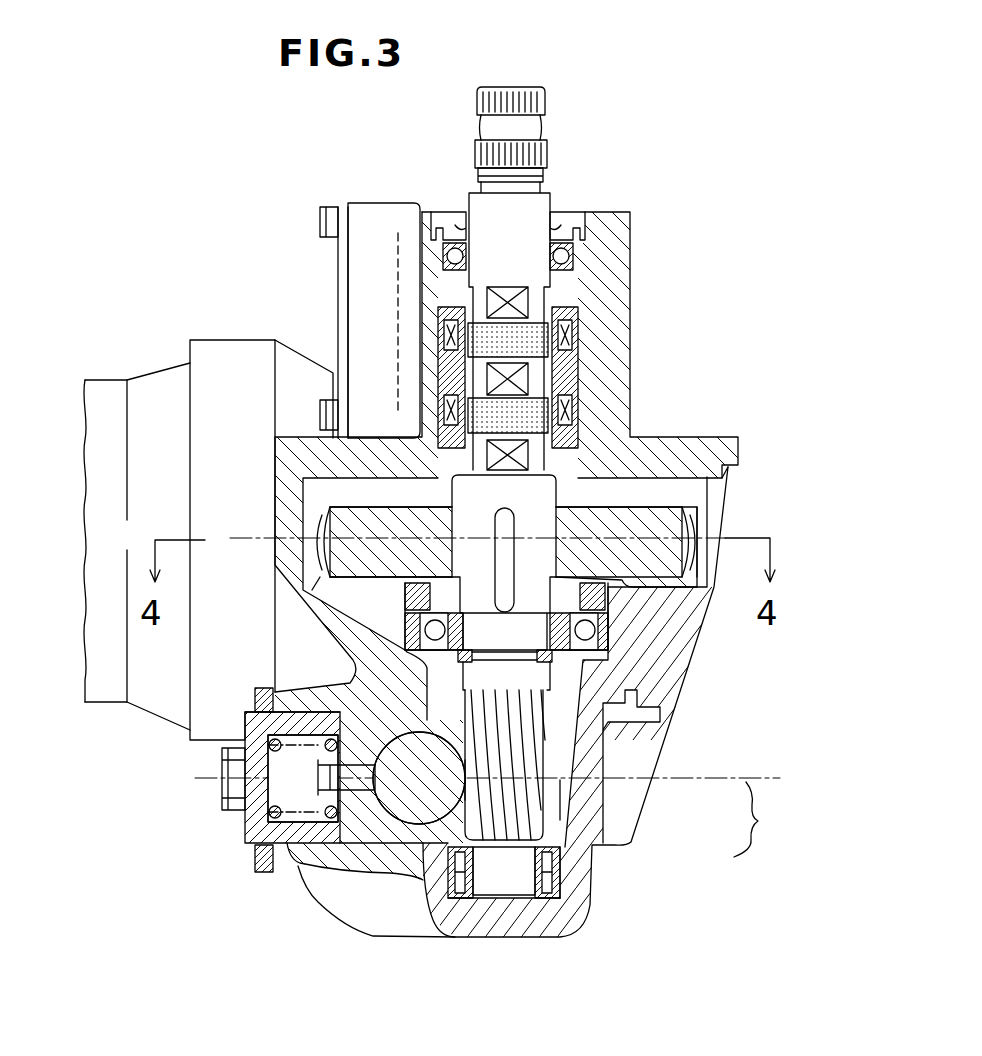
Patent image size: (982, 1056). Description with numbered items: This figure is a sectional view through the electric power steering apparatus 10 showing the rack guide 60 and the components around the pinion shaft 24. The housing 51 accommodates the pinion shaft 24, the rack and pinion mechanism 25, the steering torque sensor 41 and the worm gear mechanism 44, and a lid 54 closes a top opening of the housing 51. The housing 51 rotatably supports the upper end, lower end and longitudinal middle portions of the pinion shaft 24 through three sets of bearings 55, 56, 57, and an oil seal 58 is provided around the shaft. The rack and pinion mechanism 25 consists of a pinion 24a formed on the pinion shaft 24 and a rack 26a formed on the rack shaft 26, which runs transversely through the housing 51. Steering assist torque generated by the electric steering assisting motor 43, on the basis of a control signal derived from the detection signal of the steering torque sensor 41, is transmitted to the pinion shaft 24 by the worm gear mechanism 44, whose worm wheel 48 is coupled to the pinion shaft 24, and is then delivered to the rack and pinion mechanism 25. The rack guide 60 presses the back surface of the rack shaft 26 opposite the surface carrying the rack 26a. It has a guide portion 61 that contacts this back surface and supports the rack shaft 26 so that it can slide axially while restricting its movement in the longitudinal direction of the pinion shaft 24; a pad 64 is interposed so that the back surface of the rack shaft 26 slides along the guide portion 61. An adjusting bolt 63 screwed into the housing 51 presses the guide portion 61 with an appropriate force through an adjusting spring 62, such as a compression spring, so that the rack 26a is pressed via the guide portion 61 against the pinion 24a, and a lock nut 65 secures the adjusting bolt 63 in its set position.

The electric power steering apparatus 10 is at (217, 147).
The pinion shaft 24 is at (540, 677).
The pinion 24a is at (535, 790).
The rack and pinion mechanism 25 is at (761, 819).
The rack shaft 26 is at (430, 925).
The rack 26a is at (562, 812).
The steering torque sensor 41 is at (580, 365).
The electric steering assisting motor 43 is at (140, 390).
The worm gear mechanism 44 is at (628, 505).
The worm wheel 48 is at (658, 510).
The housing 51 is at (728, 515).
The lid 54 is at (633, 225).
The bearing 55 is at (575, 256).
The bearing 56 is at (612, 637).
The bearing 57 is at (547, 857).
The oil seal 58 is at (578, 215).
The rack guide 60 is at (204, 840).
The guide portion 61 is at (322, 833).
The adjusting spring 62 is at (276, 866).
The adjusting bolt 63 is at (243, 835).
The pad 64 is at (372, 822).
The lock nut 65 is at (255, 862).